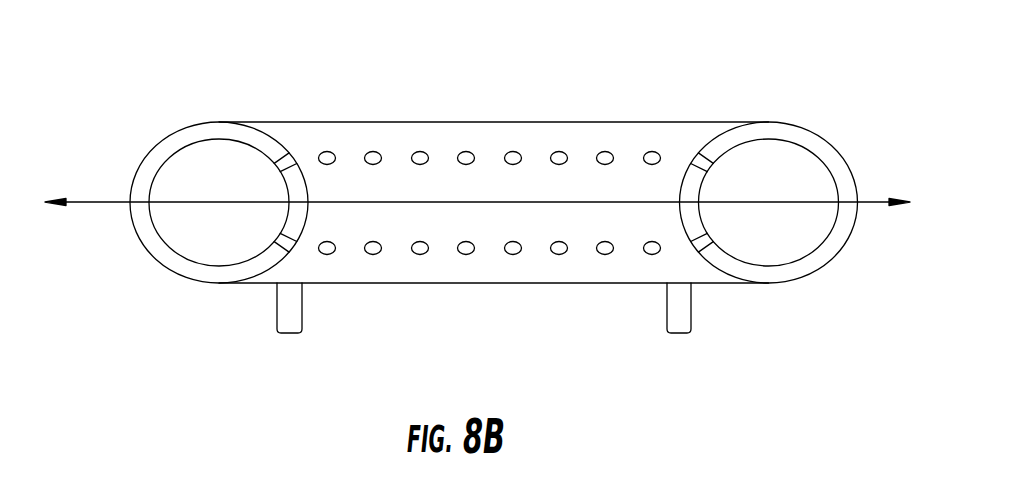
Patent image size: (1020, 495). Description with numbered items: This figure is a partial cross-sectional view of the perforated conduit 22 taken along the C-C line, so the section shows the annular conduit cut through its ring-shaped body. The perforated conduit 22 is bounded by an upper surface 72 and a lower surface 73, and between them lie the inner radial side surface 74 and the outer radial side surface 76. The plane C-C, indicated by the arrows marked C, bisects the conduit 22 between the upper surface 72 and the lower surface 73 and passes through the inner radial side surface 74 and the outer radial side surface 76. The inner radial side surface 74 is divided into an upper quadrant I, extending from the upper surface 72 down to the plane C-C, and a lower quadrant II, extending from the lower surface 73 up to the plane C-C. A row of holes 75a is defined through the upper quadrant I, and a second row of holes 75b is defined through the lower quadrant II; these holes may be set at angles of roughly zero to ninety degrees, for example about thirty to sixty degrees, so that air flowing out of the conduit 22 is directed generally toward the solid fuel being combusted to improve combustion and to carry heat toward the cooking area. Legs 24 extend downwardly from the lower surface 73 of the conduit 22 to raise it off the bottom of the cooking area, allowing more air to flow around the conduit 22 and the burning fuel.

The perforated conduit 22 is at (461, 213).
The legs 24 is at (292, 313).
The upper surface 72 is at (463, 130).
The lower surface 73 is at (447, 284).
The inner radial side surface 74 is at (410, 197).
The holes 75a is at (513, 151).
The holes 75b is at (516, 255).
The outer radial side surface 76 is at (130, 200).
The upper quadrant I is at (303, 132).
The lower quadrant II is at (350, 252).
The C-C plane C is at (477, 215).